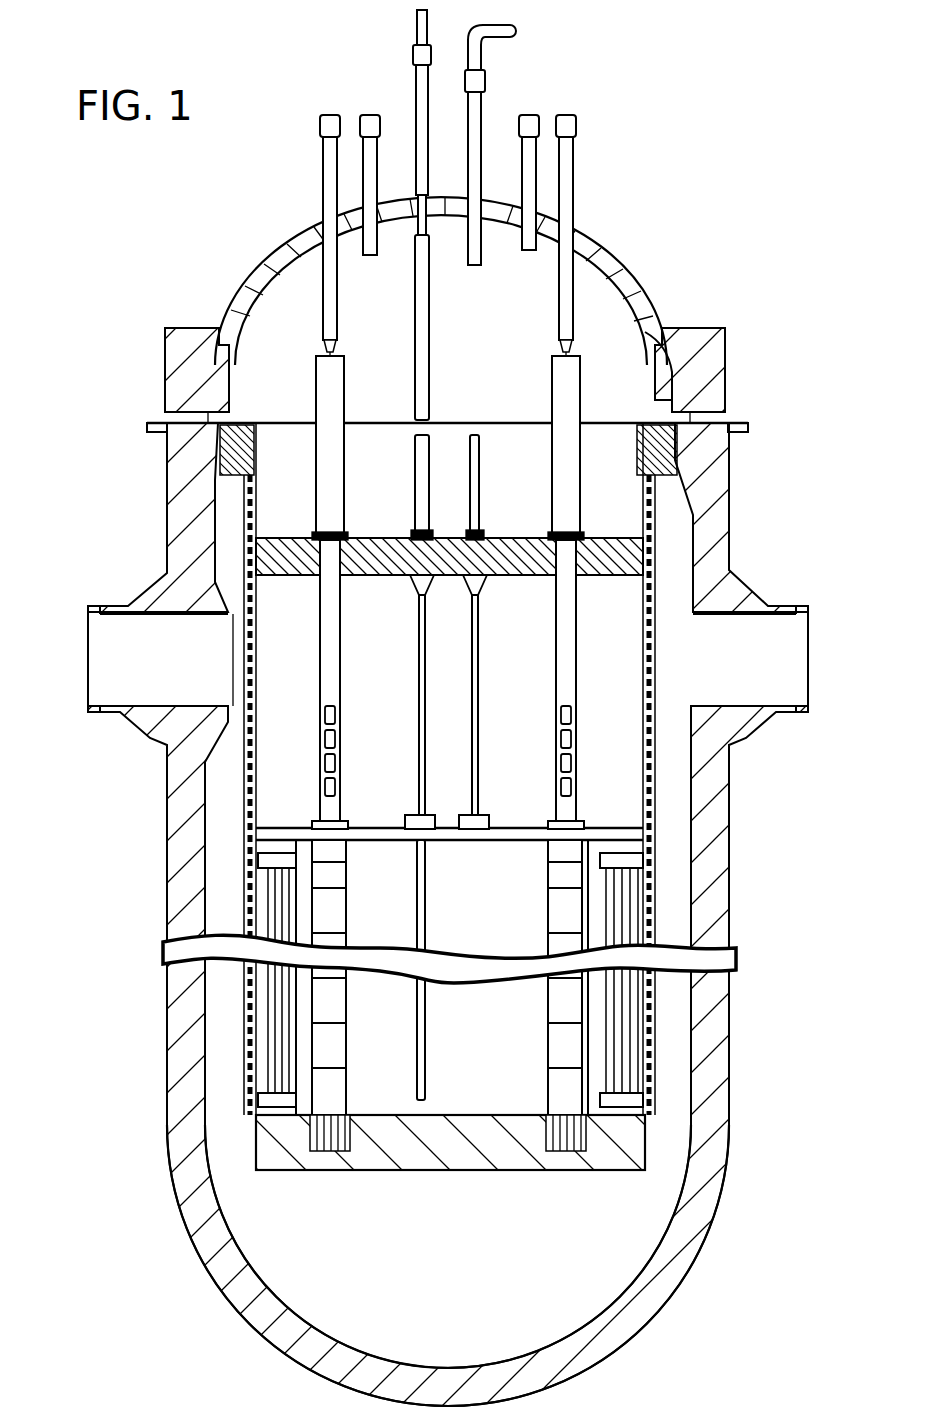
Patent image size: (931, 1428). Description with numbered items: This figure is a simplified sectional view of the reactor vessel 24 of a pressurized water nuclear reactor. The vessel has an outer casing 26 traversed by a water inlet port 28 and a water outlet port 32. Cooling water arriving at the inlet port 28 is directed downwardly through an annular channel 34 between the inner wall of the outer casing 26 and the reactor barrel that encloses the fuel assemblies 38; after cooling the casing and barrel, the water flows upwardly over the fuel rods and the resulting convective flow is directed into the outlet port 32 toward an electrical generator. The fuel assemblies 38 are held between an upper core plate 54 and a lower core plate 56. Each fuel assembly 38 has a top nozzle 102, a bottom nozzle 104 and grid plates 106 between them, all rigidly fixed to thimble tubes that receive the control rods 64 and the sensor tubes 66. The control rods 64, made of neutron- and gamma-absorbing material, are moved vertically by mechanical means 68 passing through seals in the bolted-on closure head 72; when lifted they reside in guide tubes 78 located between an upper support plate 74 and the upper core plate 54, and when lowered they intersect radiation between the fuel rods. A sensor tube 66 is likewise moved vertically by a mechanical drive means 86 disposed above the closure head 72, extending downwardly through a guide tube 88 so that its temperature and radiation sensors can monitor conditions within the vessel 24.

The reactor vessel 24 is at (148, 800).
The outer casing 26 is at (718, 834).
The water inlet port 28 is at (803, 632).
The water outlet port 32 is at (96, 631).
The annular channel 34 is at (680, 990).
The fuel assembly 38 is at (345, 1040).
The upper core plate 54 is at (370, 830).
The lower core plate 56 is at (462, 1160).
The control rod 64 is at (343, 640).
The sensor tube 66 is at (425, 996).
The mechanical means 68 is at (342, 302).
The closure head 72 is at (636, 274).
The upper support plate 74 is at (384, 538).
The guide tube 78 is at (323, 378).
The mechanical drive means 86 is at (430, 300).
The guide tube 88 is at (478, 686).
The top nozzle 102 is at (550, 852).
The bottom nozzle 104 is at (556, 1108).
The grid plate 106 is at (330, 908).